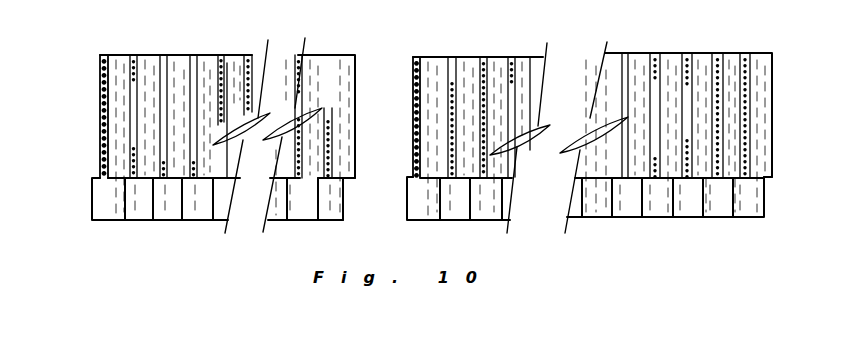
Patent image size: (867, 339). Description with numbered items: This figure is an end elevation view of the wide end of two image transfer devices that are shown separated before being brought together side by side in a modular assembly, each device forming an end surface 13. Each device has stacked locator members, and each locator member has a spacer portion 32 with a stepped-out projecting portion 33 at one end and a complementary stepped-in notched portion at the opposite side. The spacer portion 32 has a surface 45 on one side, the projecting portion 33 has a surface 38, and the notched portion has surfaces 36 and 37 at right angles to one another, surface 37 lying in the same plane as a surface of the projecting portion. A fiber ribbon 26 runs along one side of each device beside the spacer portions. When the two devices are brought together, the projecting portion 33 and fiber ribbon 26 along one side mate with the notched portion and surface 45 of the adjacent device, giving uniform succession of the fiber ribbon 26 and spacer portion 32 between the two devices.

The end surface 13 is at (495, 57).
The fiber ribbon 26 is at (102, 115).
The spacer portion 32 is at (343, 75).
The projecting portion 33 is at (102, 206).
The surface 36 is at (347, 212).
The surface 37 is at (350, 180).
The surface 38 is at (407, 180).
The surface 45 is at (357, 128).